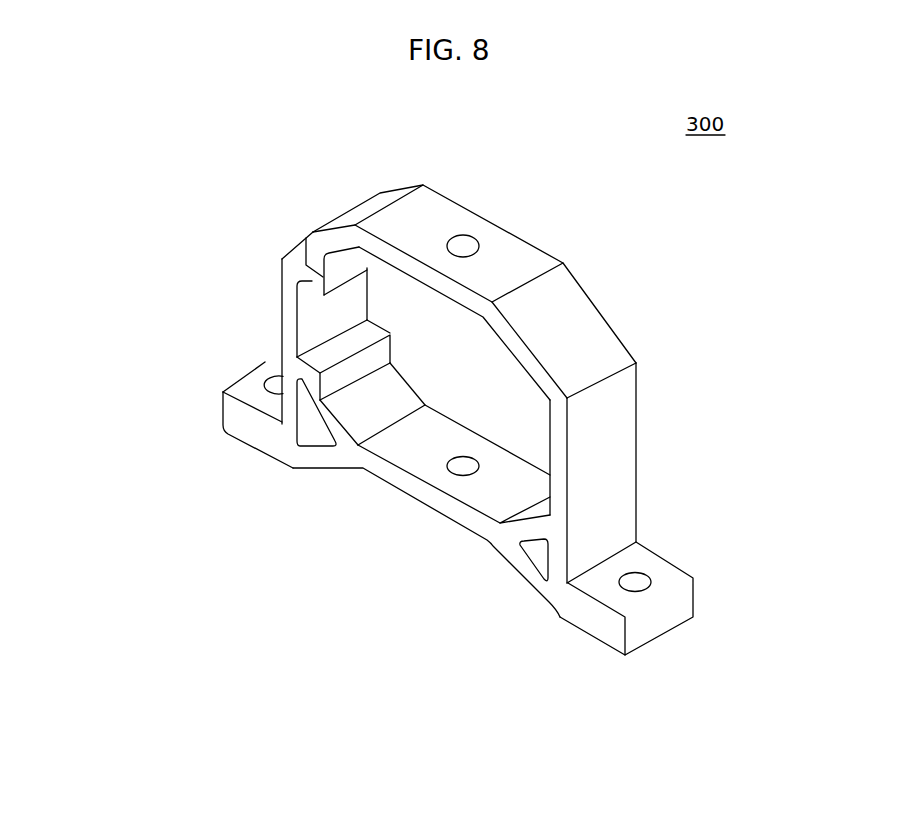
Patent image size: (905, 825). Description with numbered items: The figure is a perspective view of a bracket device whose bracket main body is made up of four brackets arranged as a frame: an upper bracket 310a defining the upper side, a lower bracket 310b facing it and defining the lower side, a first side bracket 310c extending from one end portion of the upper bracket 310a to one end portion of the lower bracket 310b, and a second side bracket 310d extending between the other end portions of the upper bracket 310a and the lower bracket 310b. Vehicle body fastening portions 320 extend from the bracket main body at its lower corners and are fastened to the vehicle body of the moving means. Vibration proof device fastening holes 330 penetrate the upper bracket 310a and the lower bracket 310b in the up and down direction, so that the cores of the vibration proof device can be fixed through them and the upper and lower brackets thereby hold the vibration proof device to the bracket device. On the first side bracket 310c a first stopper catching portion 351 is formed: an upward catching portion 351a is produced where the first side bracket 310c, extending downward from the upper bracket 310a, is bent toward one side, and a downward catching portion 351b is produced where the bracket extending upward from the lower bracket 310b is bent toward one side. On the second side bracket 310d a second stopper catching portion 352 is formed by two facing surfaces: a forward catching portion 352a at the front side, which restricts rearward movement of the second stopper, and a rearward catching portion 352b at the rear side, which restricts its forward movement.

The upper bracket 310a is at (437, 218).
The lower bracket 310b is at (423, 450).
The first side bracket 310c is at (234, 293).
The second side bracket 310d is at (701, 456).
The vehicle body fastening portion 320 is at (663, 617).
The vibration proof device fastening hole 330 is at (477, 237).
The first stopper catching portion 351 is at (217, 316).
The upward catching portion 351a is at (316, 281).
The downward catching portion 351b is at (313, 379).
The second stopper catching portion 352 is at (701, 473).
The forward catching portion 352a is at (558, 487).
The rearward catching portion 352b is at (637, 430).